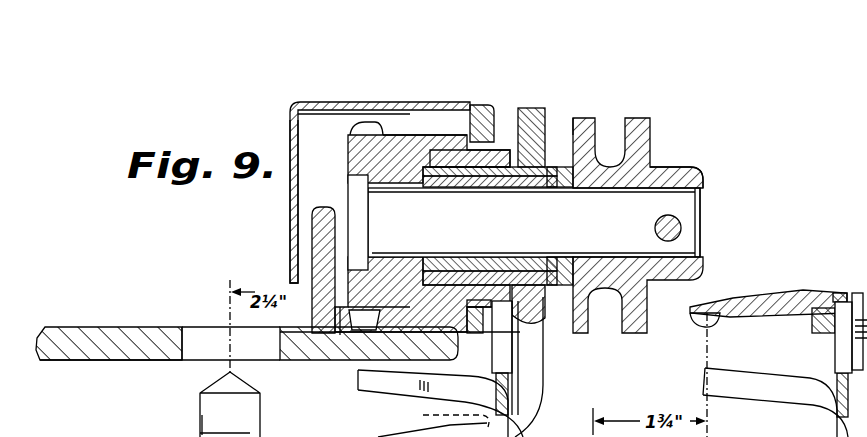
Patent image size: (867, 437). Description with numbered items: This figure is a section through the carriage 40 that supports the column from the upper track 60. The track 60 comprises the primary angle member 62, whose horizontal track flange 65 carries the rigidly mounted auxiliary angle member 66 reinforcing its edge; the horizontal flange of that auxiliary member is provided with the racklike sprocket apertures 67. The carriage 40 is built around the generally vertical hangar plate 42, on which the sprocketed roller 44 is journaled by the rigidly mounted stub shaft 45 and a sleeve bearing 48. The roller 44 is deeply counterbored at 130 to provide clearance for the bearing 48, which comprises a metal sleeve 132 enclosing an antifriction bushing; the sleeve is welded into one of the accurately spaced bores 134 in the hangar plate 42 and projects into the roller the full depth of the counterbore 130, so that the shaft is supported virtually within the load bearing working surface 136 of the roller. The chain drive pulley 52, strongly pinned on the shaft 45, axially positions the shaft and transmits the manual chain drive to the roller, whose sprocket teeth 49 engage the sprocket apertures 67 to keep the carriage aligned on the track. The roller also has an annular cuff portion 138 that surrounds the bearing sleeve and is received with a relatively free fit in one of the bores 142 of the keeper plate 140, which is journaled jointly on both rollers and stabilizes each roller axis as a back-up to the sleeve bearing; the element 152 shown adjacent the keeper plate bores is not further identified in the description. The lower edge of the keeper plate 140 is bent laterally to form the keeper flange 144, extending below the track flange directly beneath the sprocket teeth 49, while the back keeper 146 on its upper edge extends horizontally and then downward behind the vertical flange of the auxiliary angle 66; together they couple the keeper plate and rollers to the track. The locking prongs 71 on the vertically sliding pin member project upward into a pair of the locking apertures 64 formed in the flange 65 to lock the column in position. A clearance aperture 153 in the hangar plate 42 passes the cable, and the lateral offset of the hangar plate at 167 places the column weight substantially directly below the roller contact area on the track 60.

The carriage 40 is at (667, 128).
The hangar plate 42 is at (549, 108).
The sprocketed roller 44 is at (346, 171).
The stub shaft 45 is at (700, 209).
The sleeve bearing 48 is at (450, 170).
The roller sprocket teeth 49 is at (290, 125).
The chain drive pulley 52 is at (690, 172).
The upper track 60 is at (118, 321).
The primary angle member 62 is at (104, 365).
The locking apertures 64 is at (193, 328).
The horizontal track flange 65 is at (355, 355).
The auxiliary angle member 66 is at (320, 236).
The sprocket apertures 67 is at (330, 353).
The locking prongs 71 is at (212, 423).
The counterbore 130 is at (443, 160).
The metal sleeve 132 is at (500, 148).
The bores 134 is at (567, 117).
The load bearing working surfaces 136 is at (412, 135).
The annular cuff portion 138 is at (513, 110).
The keeper plate 140 is at (480, 104).
The bores 142 is at (490, 320).
The keeper flange 144 is at (370, 395).
The back keeper 146 is at (293, 102).
The nut 152 is at (505, 353).
The clearance aperture 153 is at (432, 415).
The lateral offset 167 is at (800, 433).